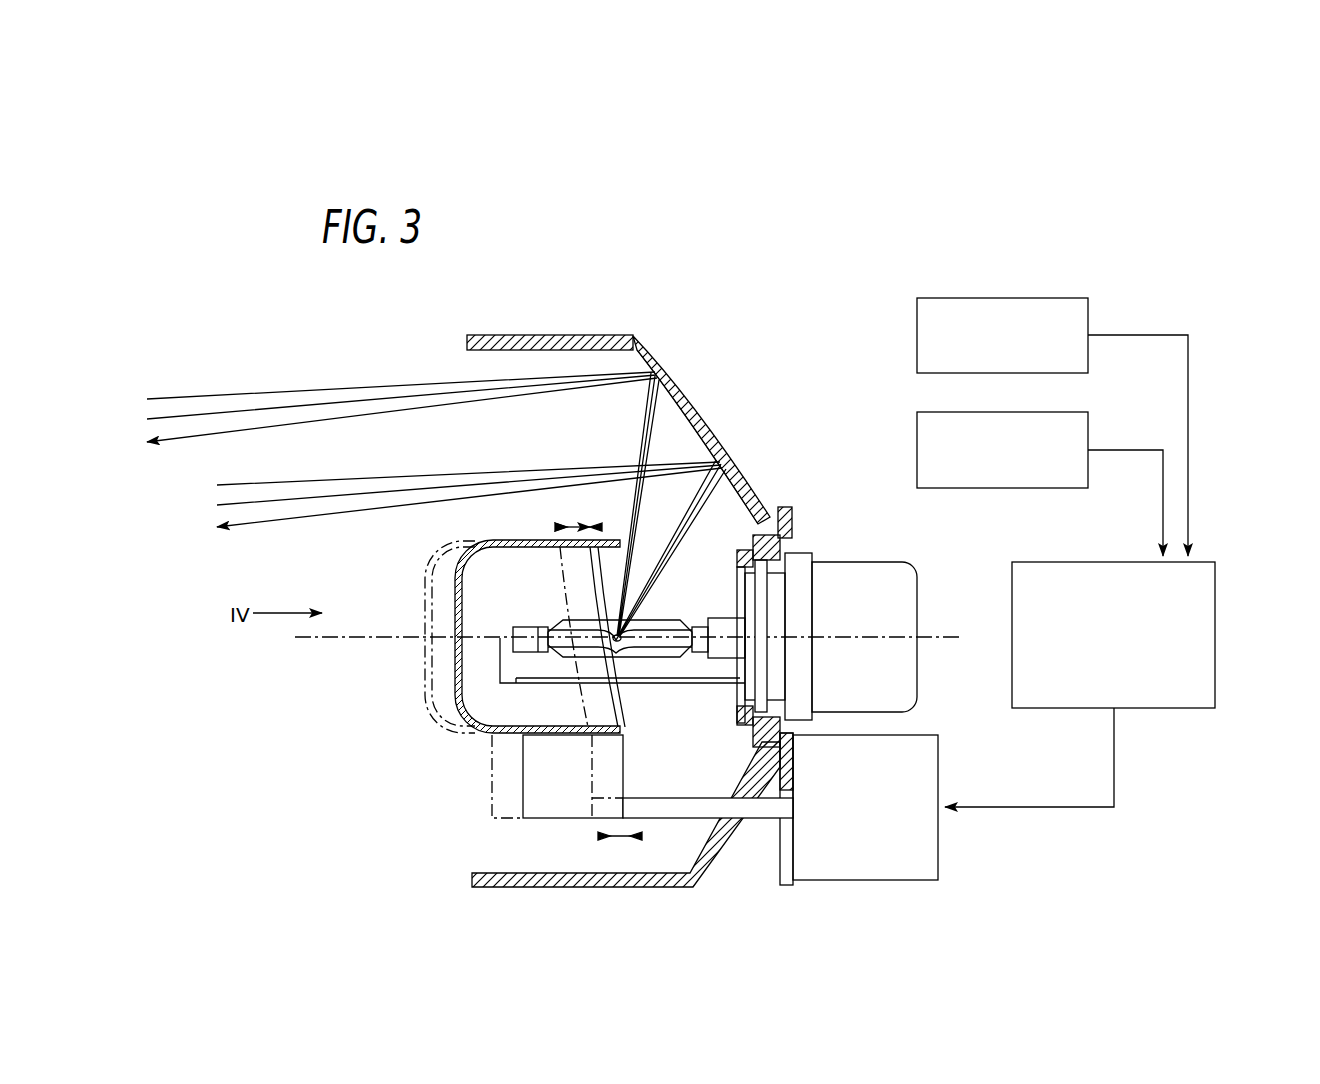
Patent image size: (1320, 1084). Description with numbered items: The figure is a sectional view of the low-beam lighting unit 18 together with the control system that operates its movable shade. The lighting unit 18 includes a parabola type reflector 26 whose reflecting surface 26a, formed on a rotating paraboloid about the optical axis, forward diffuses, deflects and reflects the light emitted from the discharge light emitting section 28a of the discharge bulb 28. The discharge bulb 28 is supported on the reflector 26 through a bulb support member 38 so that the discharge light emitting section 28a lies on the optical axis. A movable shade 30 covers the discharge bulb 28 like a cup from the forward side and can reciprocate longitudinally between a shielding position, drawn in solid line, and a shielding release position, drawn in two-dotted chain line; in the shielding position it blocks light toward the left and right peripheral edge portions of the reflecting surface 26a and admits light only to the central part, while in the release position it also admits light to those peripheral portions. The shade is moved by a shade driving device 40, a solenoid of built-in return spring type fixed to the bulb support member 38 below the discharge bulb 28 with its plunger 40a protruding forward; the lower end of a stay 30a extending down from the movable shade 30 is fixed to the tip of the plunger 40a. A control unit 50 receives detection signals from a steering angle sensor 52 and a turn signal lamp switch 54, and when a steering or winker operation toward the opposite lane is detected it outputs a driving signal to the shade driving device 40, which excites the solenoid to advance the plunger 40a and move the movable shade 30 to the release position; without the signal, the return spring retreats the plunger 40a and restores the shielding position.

The lighting unit 18 is at (750, 421).
The reflector 26 is at (699, 379).
The reflecting surface 26a is at (687, 407).
The discharge bulb 28 is at (667, 611).
The discharge light emitting section 28a is at (612, 634).
The movable shade 30 is at (450, 667).
The stay 30a is at (545, 797).
The bulb support member 38 is at (800, 518).
The shade driving device 40 is at (948, 745).
The plunger 40a is at (690, 808).
The control unit 50 is at (1217, 634).
The steering angle sensor 52 is at (917, 334).
The turn signal lamp switch 54 is at (917, 451).